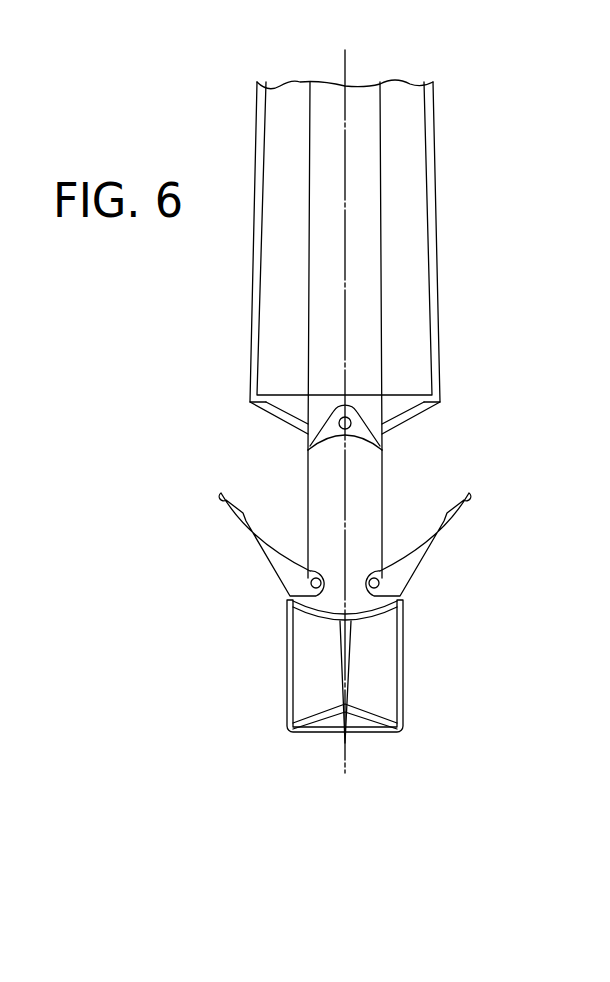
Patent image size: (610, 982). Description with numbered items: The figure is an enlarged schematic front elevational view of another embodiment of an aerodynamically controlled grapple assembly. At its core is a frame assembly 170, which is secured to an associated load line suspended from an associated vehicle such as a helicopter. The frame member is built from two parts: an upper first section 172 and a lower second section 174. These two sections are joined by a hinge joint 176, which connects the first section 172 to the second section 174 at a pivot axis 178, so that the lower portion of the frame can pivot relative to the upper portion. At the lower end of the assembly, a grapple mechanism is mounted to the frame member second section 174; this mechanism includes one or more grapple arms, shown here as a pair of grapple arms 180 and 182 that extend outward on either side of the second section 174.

The frame assembly 170 is at (381, 237).
The first section 172 is at (327, 297).
The second section 174 is at (313, 482).
The hinge joint 176 is at (329, 423).
The pivot axis 178 is at (353, 430).
The grapple arm 180 is at (259, 549).
The grapple arm 182 is at (432, 550).